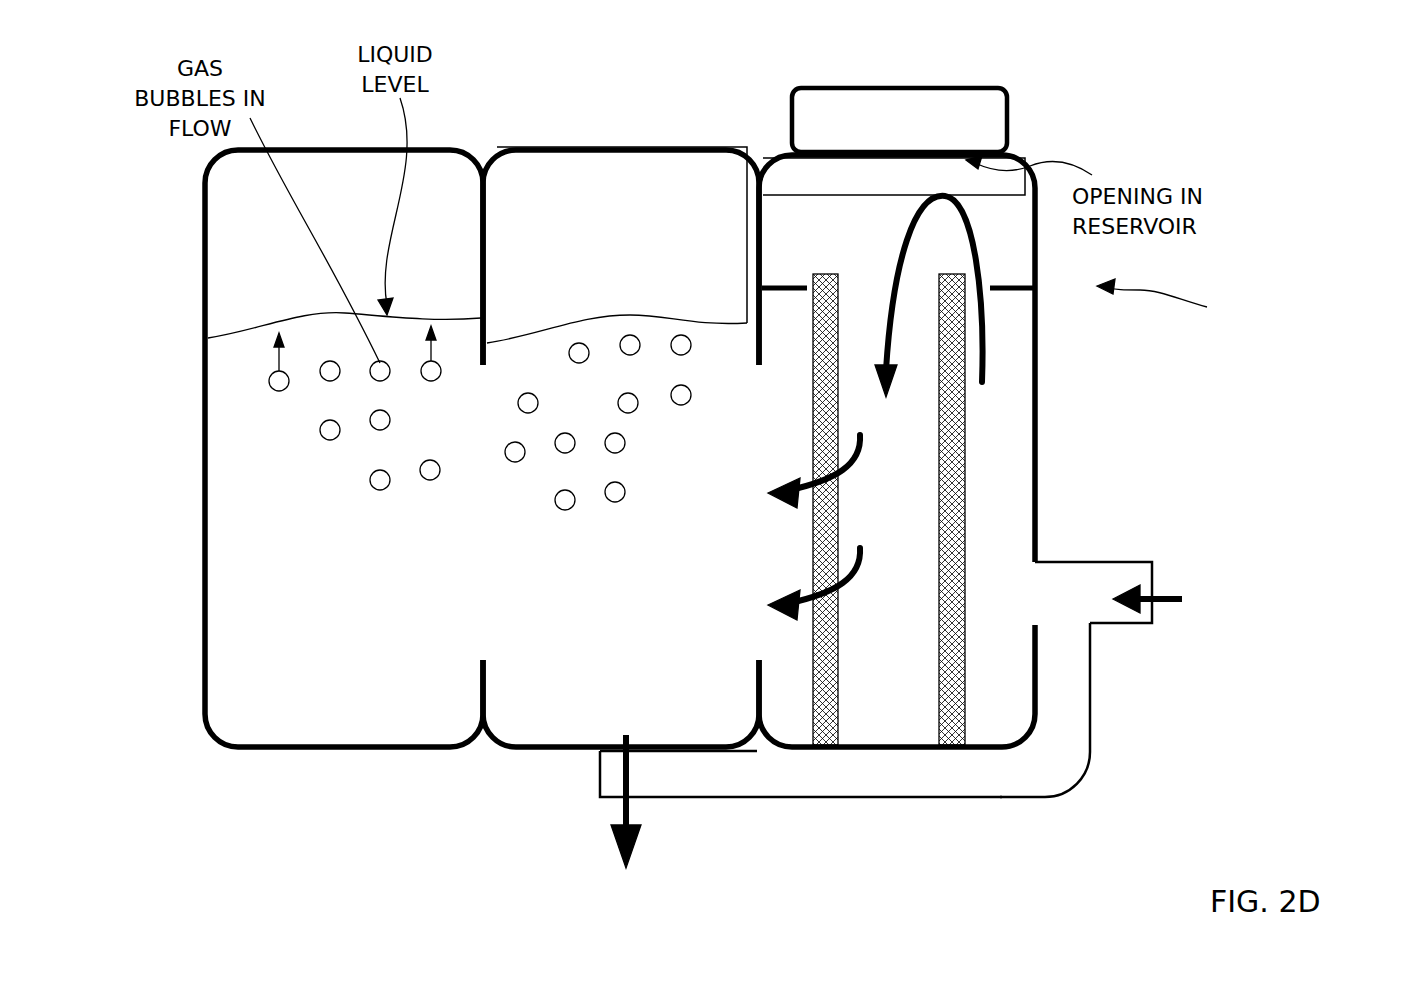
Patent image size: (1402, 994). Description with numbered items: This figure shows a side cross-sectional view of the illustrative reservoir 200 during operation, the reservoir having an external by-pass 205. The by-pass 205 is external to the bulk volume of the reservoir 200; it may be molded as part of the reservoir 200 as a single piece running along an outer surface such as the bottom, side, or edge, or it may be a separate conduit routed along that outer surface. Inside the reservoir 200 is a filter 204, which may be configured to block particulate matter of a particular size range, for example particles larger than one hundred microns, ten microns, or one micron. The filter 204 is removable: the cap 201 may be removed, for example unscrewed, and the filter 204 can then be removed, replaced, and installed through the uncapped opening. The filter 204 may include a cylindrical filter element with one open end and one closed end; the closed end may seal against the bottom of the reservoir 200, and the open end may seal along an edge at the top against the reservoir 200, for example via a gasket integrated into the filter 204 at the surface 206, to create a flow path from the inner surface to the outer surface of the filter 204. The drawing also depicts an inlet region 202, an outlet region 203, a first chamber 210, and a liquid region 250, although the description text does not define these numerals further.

The reservoir 200 is at (724, 60).
The cap 201 is at (1007, 102).
The inlet conduit 202 is at (1117, 625).
The outlet conduit 203 is at (752, 775).
The filter 204 is at (985, 458).
The external by-pass 205 is at (1060, 750).
The surface 206 is at (1003, 290).
The first chamber 210 is at (480, 698).
The liquid 250 is at (803, 170).